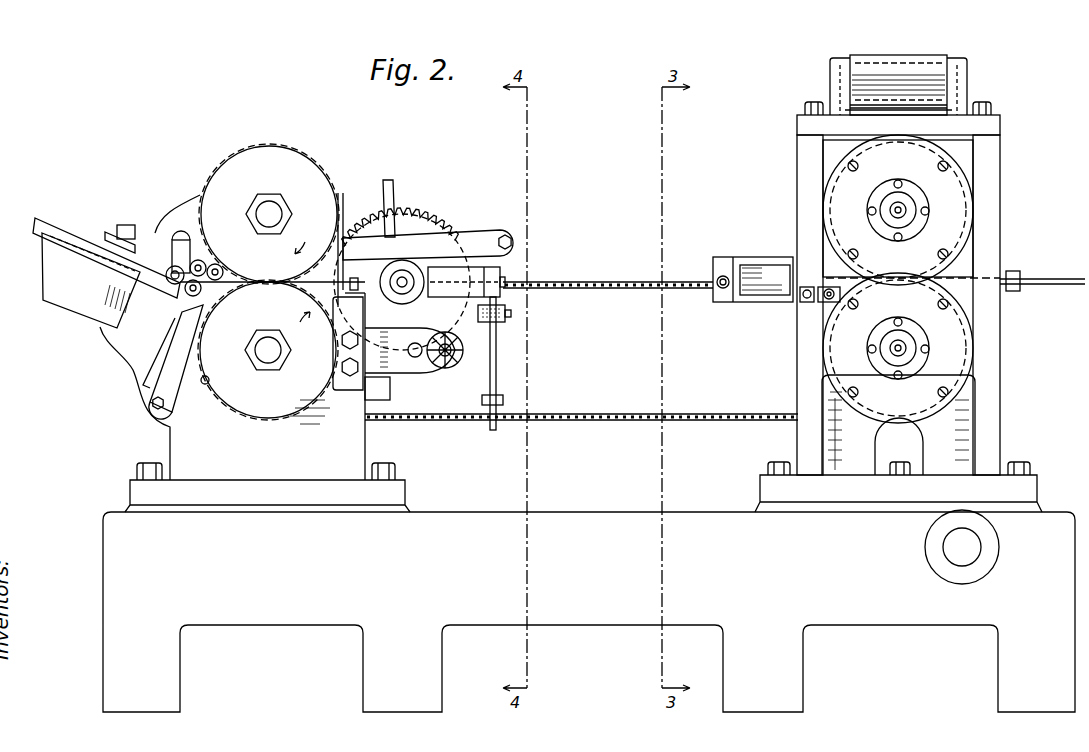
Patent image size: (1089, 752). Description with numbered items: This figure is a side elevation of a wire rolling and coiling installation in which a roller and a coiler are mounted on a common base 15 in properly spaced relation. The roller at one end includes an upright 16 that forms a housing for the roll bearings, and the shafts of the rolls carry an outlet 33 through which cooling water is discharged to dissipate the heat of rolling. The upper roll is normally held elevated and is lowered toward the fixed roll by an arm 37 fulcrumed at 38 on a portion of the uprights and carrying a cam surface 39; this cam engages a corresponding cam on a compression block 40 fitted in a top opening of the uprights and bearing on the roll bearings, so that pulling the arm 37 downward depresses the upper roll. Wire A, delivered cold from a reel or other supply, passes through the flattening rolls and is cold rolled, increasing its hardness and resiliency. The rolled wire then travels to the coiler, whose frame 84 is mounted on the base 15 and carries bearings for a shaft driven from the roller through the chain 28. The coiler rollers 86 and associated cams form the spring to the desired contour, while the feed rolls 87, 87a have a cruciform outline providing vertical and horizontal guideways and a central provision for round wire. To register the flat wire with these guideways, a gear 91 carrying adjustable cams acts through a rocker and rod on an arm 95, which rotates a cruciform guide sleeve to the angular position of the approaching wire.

The base 15 is at (580, 512).
The upright 16 is at (992, 178).
The chain 28 is at (634, 290).
The outlet 33 is at (906, 212).
The arm 37 is at (898, 55).
The fulcrum 38 is at (967, 78).
The cam surface 39 is at (912, 100).
The compression block 40 is at (950, 106).
The frame 84 is at (345, 430).
The coiler rollers 86 is at (194, 215).
The feed roll 87 is at (312, 176).
The feed roll 87a is at (252, 404).
The gear 91 is at (440, 216).
The arm 95 is at (497, 349).
The wire A is at (1040, 276).